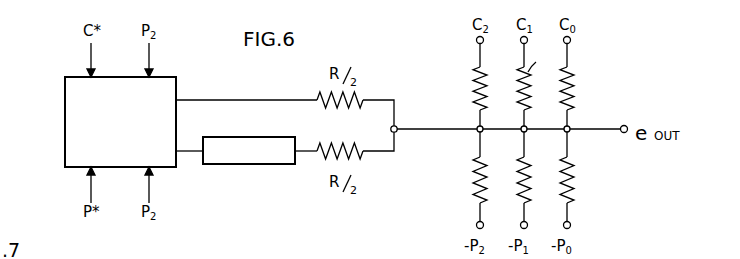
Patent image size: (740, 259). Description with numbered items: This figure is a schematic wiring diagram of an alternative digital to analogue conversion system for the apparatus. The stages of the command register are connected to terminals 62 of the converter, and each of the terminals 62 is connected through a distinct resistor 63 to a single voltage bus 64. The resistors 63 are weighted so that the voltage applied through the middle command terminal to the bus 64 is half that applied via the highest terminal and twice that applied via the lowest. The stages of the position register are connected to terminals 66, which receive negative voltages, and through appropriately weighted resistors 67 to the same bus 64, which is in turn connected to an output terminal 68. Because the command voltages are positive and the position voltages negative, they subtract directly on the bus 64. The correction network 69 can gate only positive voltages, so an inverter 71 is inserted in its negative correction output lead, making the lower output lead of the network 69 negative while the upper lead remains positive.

The terminals 62 is at (580, 48).
The resistors 63 is at (559, 96).
The bus 64 is at (426, 128).
The terminals 66 is at (563, 225).
The resistors 67 is at (572, 178).
The output terminal 68 is at (623, 125).
The correction network 69 is at (170, 77).
The inverter 71 is at (242, 165).